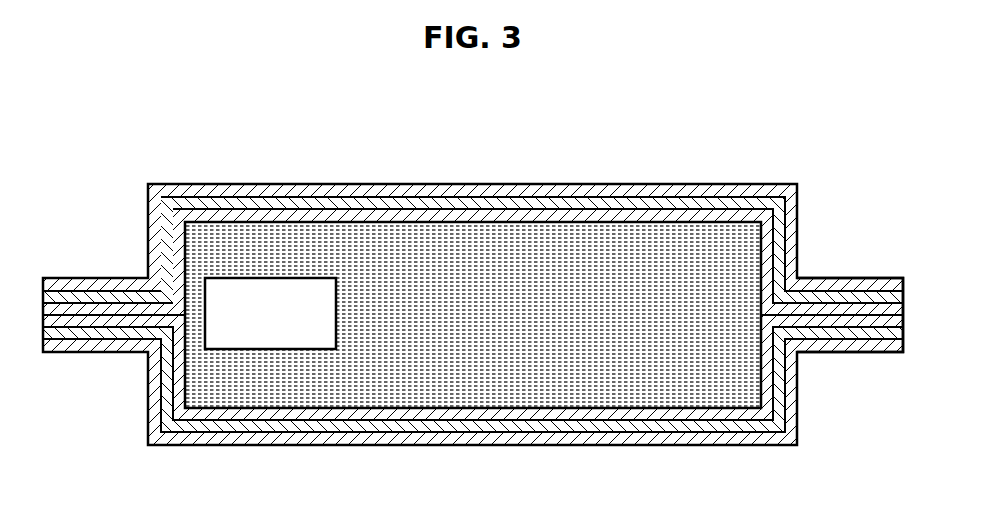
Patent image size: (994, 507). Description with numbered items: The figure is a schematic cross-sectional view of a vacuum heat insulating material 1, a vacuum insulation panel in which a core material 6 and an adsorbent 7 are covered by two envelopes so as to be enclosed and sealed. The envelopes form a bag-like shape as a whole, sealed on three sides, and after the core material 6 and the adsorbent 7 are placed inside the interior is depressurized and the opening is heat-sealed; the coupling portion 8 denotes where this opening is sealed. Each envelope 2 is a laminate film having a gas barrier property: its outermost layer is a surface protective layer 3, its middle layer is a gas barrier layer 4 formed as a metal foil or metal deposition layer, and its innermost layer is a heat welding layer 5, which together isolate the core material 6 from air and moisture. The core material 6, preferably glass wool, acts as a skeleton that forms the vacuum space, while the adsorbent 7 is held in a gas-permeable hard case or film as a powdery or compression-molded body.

The vacuum heat insulating material 1 is at (178, 100).
The envelope 2 is at (522, 110).
The surface protective layer 3 is at (637, 192).
The gas barrier layer 4 is at (580, 207).
The heat welding layer 5 is at (523, 220).
The core material 6 is at (374, 248).
The adsorbent 7 is at (263, 290).
The coupling portion 8 is at (854, 278).